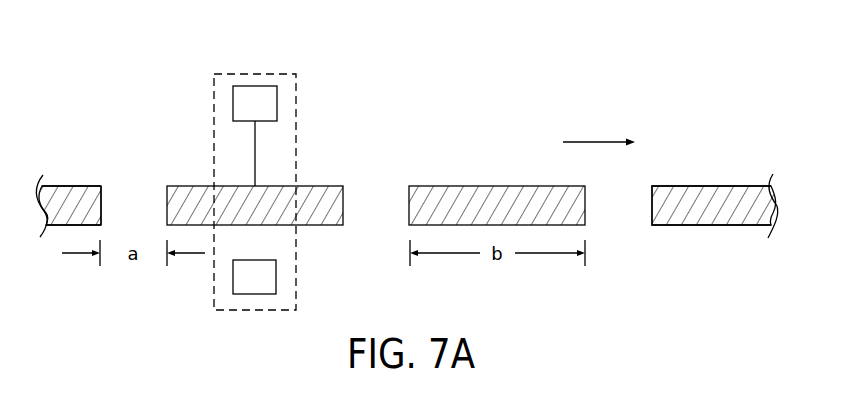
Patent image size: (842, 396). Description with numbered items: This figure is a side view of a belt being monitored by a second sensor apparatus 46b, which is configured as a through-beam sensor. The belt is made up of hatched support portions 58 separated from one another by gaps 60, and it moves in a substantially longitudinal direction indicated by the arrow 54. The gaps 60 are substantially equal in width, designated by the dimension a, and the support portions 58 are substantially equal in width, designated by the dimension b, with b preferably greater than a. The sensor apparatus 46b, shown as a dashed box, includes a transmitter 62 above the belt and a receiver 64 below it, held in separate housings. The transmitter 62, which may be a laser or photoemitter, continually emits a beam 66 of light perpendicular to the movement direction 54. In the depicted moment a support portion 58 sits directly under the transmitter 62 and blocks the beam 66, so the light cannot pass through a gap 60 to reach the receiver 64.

The second sensor apparatus 46b is at (297, 118).
The arrow indicating longitudinal movement direction 54 is at (598, 142).
The support portions 58 is at (328, 186).
The gaps 60 is at (379, 232).
The transmitter 62 is at (250, 86).
The receiver 64 is at (233, 278).
The beam 66 is at (255, 157).